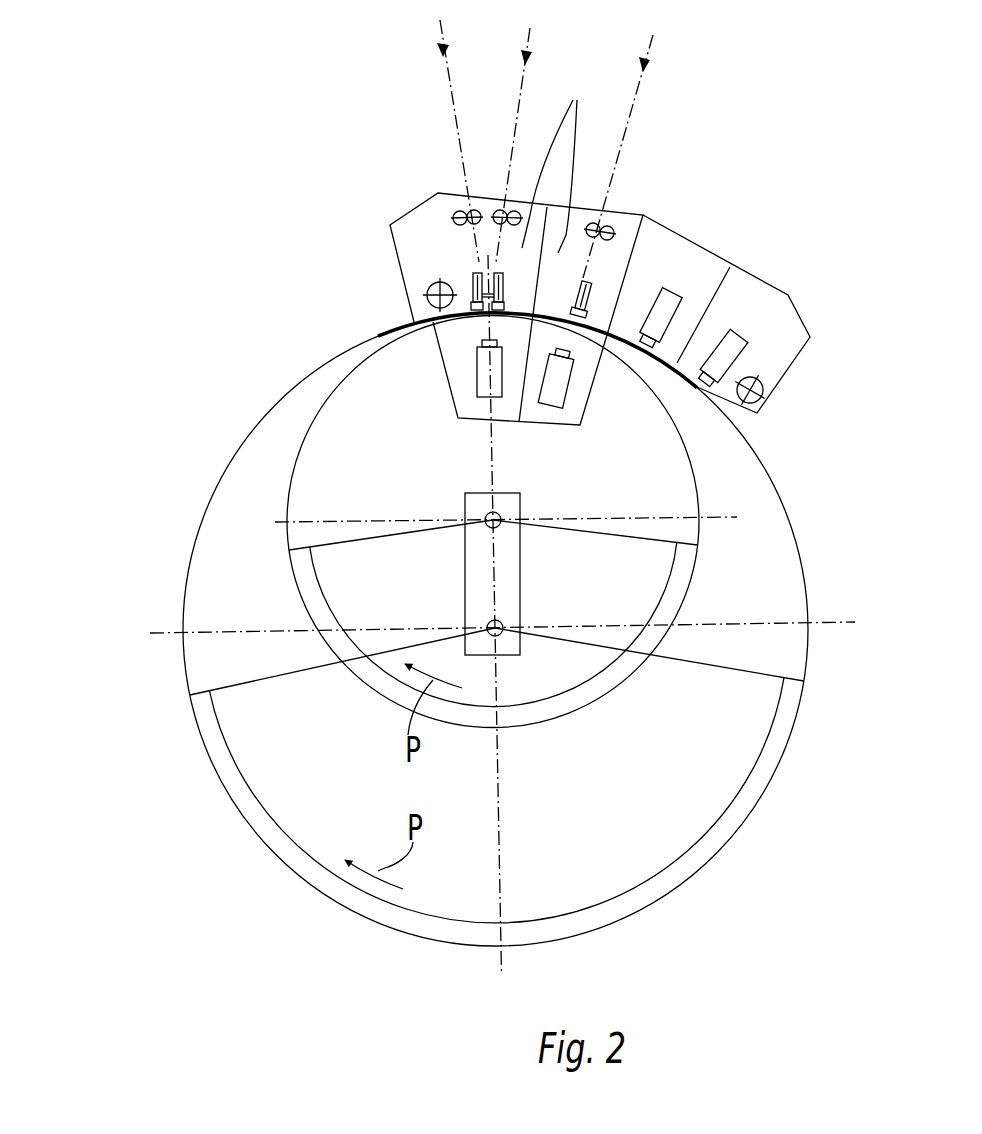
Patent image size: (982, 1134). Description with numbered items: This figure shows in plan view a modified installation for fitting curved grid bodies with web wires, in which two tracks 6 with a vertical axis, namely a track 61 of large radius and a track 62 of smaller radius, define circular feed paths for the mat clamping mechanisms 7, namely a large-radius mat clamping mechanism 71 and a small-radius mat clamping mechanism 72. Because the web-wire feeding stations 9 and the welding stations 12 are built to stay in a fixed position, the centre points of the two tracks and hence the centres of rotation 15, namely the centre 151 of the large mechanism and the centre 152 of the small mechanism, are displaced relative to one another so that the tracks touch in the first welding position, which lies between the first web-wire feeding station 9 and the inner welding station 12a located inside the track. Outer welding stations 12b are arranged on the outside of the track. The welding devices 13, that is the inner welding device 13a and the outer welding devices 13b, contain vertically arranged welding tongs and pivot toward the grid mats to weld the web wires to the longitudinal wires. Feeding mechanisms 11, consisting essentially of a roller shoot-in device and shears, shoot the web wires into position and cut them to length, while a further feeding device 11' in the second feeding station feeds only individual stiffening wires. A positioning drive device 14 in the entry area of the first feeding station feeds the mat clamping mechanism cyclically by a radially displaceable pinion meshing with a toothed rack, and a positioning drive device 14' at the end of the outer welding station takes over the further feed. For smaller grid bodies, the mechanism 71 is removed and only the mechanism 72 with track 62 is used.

The track 6 is at (445, 629).
The track 61 is at (184, 612).
The track 62 is at (295, 468).
The mat clamping mechanism 7 is at (435, 736).
The mat clamping mechanism 71 is at (310, 817).
The mat clamping mechanism 72 is at (337, 568).
The web-wire feeding station 9 is at (554, 158).
The feeding mechanism 11 is at (422, 177).
The feeding device 11' is at (641, 177).
The welding station 12 is at (521, 294).
The inner welding station 12a is at (465, 360).
The outer welding station 12b is at (667, 253).
The welding device 13 is at (615, 348).
The inner welding device 13a is at (547, 412).
The outer welding device 13b is at (667, 313).
The positioning drive device 14 is at (366, 262).
The positioning drive device 14' is at (798, 411).
The centre of rotation 15 is at (476, 634).
The centre of rotation 151 is at (505, 637).
The centre of rotation 152 is at (467, 515).